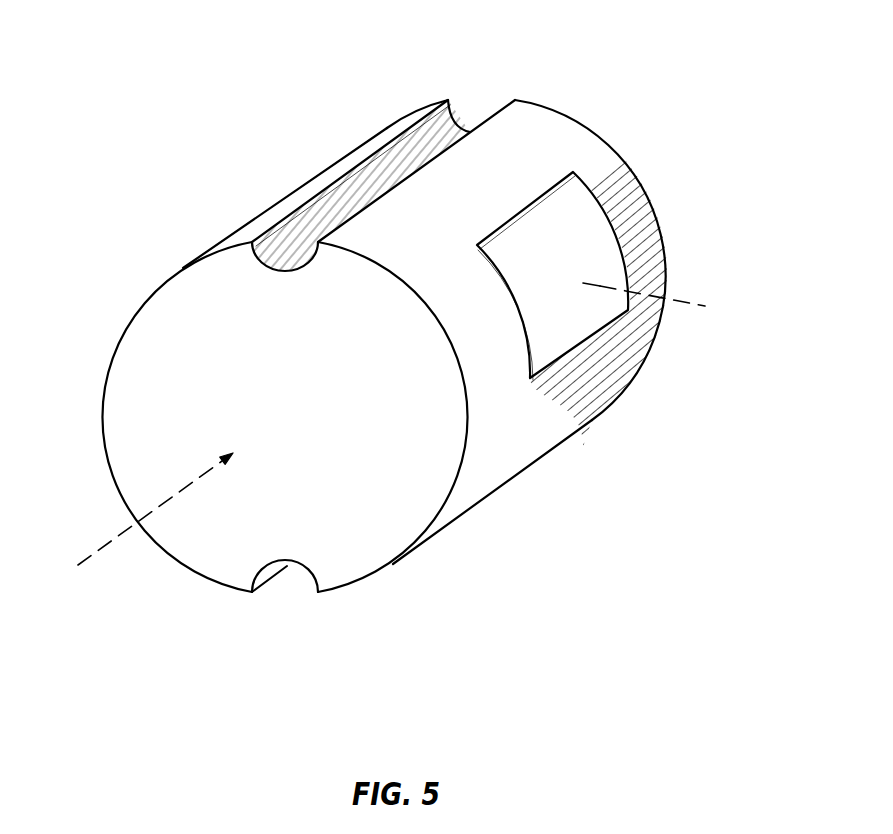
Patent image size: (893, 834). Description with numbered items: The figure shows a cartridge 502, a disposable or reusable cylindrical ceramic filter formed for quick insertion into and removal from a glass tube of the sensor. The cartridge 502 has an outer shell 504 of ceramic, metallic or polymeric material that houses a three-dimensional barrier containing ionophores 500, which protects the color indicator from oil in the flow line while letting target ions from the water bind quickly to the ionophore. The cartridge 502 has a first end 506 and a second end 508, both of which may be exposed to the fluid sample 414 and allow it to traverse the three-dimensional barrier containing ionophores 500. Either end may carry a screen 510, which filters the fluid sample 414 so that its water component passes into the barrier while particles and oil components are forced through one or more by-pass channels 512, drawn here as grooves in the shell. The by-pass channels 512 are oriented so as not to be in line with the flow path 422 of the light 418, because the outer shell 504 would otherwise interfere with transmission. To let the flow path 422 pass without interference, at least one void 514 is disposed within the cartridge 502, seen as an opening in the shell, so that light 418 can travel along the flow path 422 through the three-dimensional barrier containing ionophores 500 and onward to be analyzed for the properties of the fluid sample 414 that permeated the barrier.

The three-dimensional barrier containing ionophores 500 is at (555, 261).
The cartridge 502 is at (552, 553).
The outer shell 504 is at (317, 178).
The first end 506 is at (113, 247).
The second end 508 is at (587, 114).
The screen 510 is at (256, 402).
The by-pass channels 512 is at (478, 100).
The void 514 is at (530, 378).
The fluid sample 414 is at (108, 543).
The light 418 is at (727, 313).
The flow path 422 is at (598, 283).